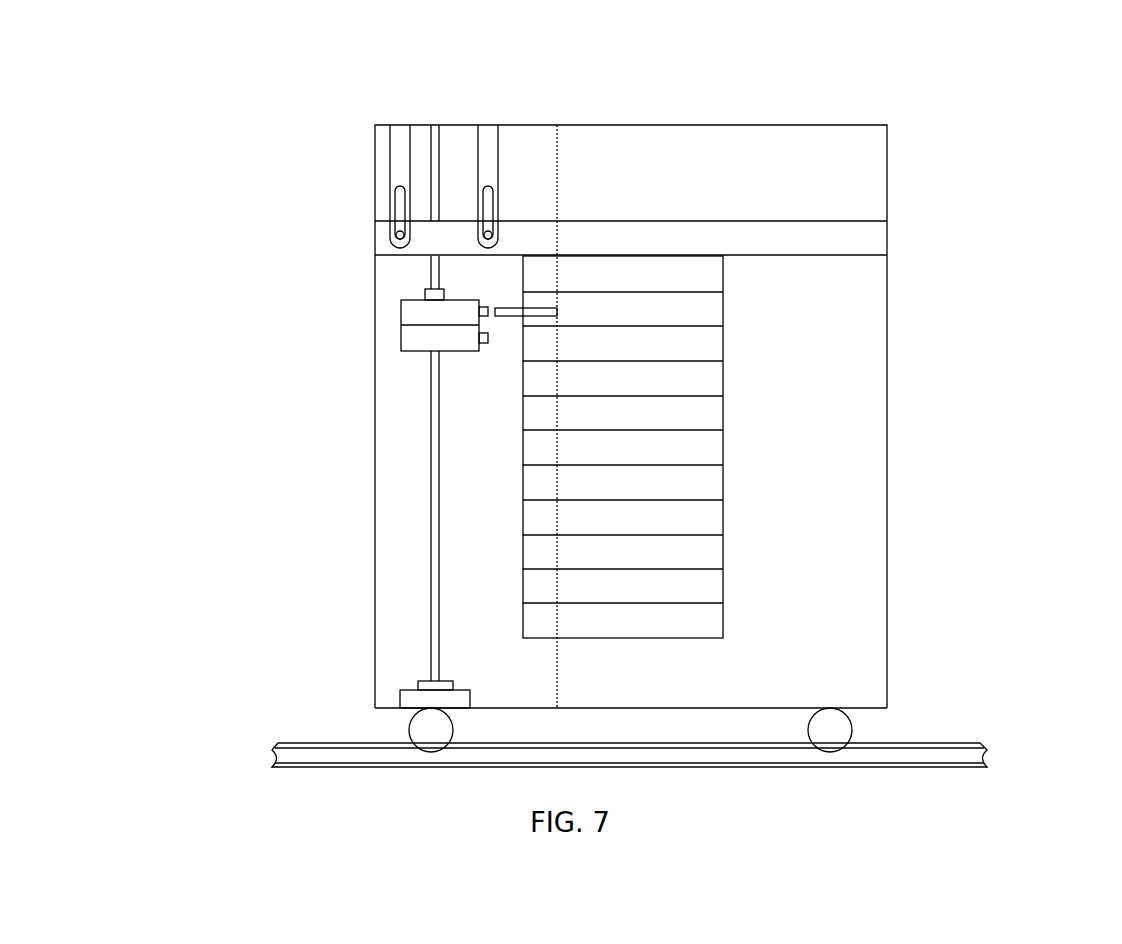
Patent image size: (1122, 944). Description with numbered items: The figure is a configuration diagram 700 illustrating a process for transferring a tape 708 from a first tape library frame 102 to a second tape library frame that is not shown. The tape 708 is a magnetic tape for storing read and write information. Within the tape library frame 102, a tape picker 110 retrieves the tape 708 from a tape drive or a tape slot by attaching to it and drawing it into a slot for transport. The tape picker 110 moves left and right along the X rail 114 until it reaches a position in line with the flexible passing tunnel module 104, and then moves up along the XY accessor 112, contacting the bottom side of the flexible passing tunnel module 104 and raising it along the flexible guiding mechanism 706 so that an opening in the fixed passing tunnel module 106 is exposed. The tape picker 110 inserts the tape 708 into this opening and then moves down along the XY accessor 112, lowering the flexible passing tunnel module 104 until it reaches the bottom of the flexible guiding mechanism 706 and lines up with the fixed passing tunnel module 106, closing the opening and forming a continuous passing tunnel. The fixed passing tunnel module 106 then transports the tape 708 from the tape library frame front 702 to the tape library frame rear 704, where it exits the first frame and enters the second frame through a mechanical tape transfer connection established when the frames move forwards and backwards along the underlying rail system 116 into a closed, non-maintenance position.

The configuration diagram 700 is at (193, 70).
The tape library frame 102 is at (887, 382).
The tape library frame front 702 is at (375, 161).
The tape library frame rear 704 is at (893, 171).
The flexible passing tunnel module 104 is at (375, 242).
The fixed passing tunnel module 106 is at (893, 245).
The flexible guiding mechanism 706 is at (404, 125).
The tape picker 110 is at (401, 341).
The tape 708 is at (512, 317).
The XY accessor 112 is at (431, 622).
The X rail 114 is at (395, 700).
The underlying rail system 116 is at (965, 743).